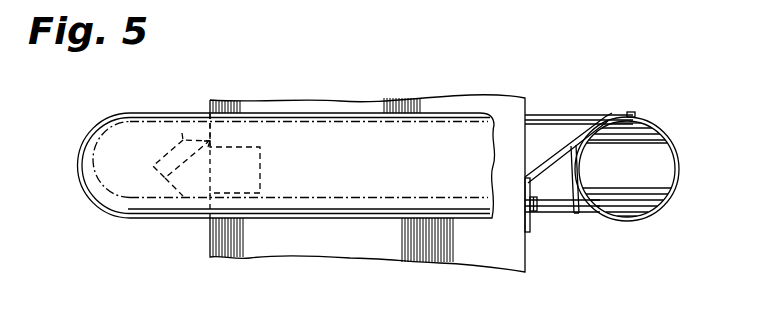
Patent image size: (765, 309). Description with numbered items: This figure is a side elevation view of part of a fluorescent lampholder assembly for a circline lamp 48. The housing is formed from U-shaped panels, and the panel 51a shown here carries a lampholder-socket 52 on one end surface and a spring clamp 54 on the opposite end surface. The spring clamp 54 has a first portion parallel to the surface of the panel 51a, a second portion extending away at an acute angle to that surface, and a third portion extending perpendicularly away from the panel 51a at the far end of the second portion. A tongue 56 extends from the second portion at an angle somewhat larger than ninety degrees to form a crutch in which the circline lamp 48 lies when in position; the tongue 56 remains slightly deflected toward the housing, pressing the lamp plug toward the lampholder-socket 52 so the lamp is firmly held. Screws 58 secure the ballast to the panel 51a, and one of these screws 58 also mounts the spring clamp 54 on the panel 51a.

The circline lamp 48 is at (670, 130).
The panel 51a is at (524, 272).
The lampholder-socket 52 is at (182, 132).
The spring clamp 54 is at (571, 150).
The tongue 56 is at (575, 212).
The screws 58 is at (537, 210).